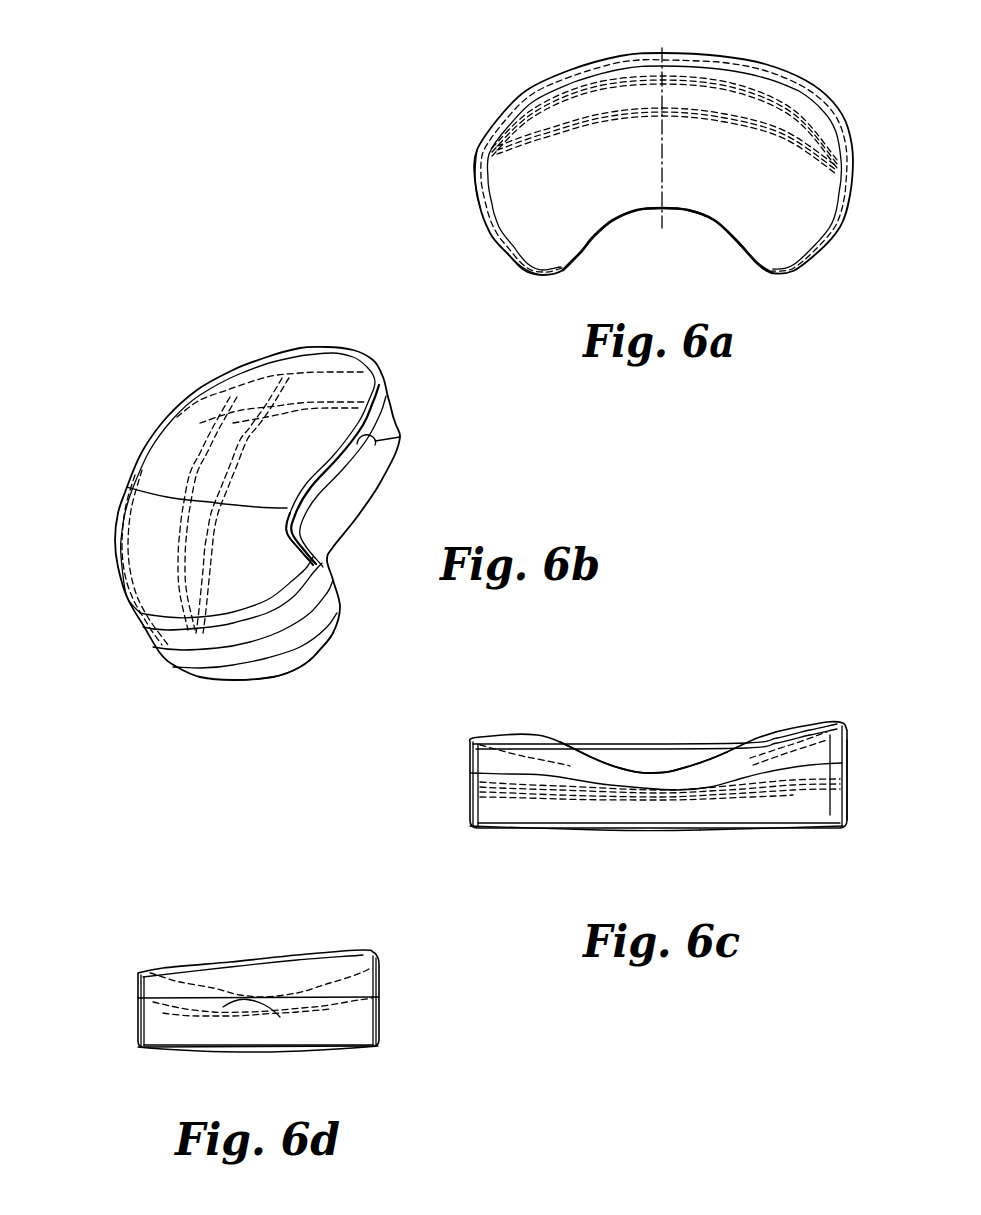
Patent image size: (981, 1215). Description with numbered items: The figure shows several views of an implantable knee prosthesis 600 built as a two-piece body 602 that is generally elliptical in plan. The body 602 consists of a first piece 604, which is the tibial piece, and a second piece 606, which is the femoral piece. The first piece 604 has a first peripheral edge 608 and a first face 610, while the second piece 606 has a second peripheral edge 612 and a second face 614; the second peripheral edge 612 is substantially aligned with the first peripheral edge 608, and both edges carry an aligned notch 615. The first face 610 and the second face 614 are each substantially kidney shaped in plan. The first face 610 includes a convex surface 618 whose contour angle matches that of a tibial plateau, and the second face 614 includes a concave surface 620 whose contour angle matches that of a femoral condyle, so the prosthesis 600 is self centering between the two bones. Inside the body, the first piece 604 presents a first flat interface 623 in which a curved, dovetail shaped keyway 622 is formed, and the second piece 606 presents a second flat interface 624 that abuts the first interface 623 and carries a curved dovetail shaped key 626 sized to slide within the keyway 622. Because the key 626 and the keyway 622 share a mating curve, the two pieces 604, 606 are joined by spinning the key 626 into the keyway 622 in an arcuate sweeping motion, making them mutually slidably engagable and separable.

In FIG. 6A, the implantable knee prosthesis 600 is at (757, 48).
In FIG. 6B, the implantable knee prosthesis 600 is at (198, 350).
In FIG. 6C, the implantable knee prosthesis 600 is at (800, 683).
In FIG. 6D, the implantable knee prosthesis 600 is at (182, 918).
In FIG. 6A, the two-piece body 602 is at (627, 48).
In FIG. 6B, the two-piece body 602 is at (321, 345).
In FIG. 6C, the two-piece body 602 is at (468, 740).
In FIG. 6D, the two-piece body 602 is at (373, 953).
In FIG. 6B, the first piece 604 is at (303, 662).
In FIG. 6C, the first piece 604 is at (470, 828).
In FIG. 6D, the first piece 604 is at (140, 1047).
In FIG. 6A, the second piece 606 is at (475, 186).
In FIG. 6B, the second piece 606 is at (316, 557).
In FIG. 6C, the second piece 606 is at (838, 733).
In FIG. 6D, the second piece 606 is at (138, 973).
In FIG. 6B, the first peripheral edge 608 is at (266, 655).
In FIG. 6C, the first peripheral edge 608 is at (470, 803).
In FIG. 6C, the first face 610 is at (705, 831).
In FIG. 6D, the first face 610 is at (243, 1053).
In FIG. 6B, the second peripheral edge 612 is at (315, 600).
In FIG. 6C, the second peripheral edge 612 is at (848, 752).
In FIG. 6A, the second face 614 is at (513, 257).
In FIG. 6B, the second face 614 is at (258, 357).
In FIG. 6C, the second face 614 is at (680, 742).
In FIG. 6D, the second face 614 is at (322, 950).
In FIG. 6A, the notch 615 is at (675, 212).
In FIG. 6B, the notch 615 is at (322, 513).
In FIG. 6C, the convex surface 618 is at (593, 831).
In FIG. 6D, the convex surface 618 is at (255, 1053).
In FIG. 6C, the concave surface 620 is at (565, 757).
In FIG. 6D, the concave surface 620 is at (218, 965).
In FIG. 6A, the keyway 622 is at (690, 72).
In FIG. 6B, the keyway 622 is at (200, 650).
In FIG. 6D, the keyway 622 is at (280, 1017).
In FIG. 6B, the first flat interface 623 is at (400, 437).
In FIG. 6D, the first flat interface 623 is at (363, 993).
In FIG. 6B, the second flat interface 624 is at (335, 617).
In FIG. 6D, the second flat interface 624 is at (158, 1006).
In FIG. 6A, the key 626 is at (778, 93).
In FIG. 6B, the key 626 is at (180, 650).
In FIG. 6D, the key 626 is at (223, 1007).